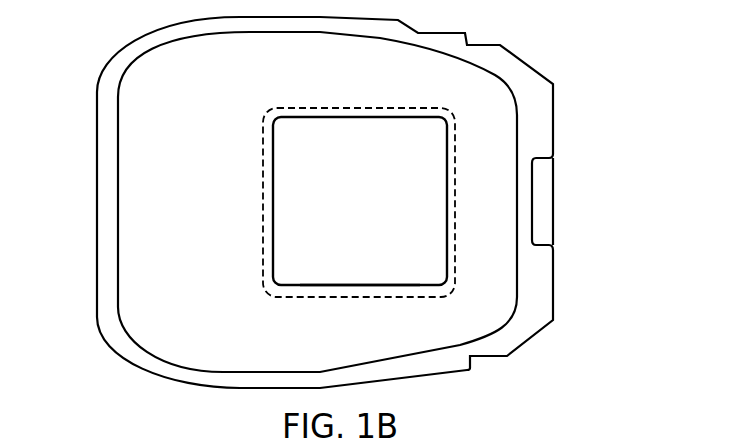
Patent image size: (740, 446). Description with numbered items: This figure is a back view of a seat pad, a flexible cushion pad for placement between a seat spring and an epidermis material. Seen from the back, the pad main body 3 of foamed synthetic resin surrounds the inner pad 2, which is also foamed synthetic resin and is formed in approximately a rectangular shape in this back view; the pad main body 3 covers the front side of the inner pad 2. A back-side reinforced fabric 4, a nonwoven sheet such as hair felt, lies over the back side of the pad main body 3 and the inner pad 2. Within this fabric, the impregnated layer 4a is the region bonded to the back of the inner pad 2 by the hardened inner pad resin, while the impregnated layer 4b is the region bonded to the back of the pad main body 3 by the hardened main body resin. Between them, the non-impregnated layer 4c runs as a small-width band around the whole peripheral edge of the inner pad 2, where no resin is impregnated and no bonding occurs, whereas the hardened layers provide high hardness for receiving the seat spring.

The inner pad 2 is at (288, 177).
The pad main body 3 is at (108, 230).
The back-side reinforced fabric 4 is at (533, 103).
The impregnated layer 4a is at (395, 270).
The impregnated layer 4b is at (489, 203).
The non-impregnated layer 4c is at (446, 224).